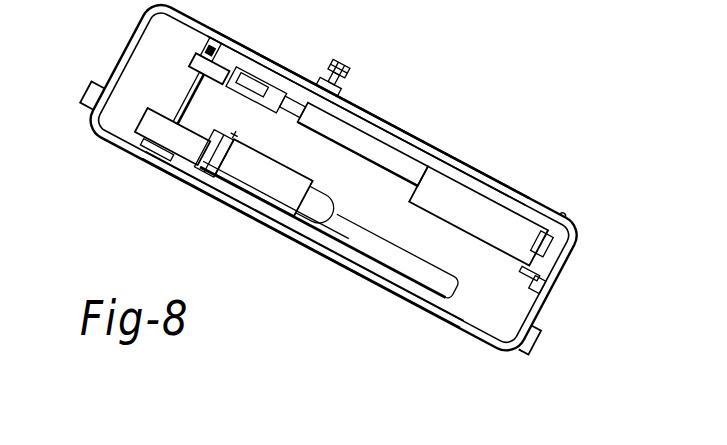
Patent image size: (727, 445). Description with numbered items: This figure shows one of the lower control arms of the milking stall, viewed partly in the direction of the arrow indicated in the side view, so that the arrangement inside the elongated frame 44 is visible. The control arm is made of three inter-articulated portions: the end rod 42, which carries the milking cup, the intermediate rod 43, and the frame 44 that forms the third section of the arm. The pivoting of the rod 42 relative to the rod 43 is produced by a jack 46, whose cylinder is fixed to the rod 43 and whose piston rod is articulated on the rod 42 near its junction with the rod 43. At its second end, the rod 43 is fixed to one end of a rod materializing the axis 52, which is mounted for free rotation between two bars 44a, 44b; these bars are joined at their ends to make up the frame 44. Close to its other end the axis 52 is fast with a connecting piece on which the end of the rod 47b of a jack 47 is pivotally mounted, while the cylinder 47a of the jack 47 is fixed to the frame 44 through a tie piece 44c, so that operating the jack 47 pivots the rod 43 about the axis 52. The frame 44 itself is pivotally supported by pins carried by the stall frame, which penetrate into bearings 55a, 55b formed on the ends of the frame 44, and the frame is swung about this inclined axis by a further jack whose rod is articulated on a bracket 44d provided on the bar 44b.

The rod 42 is at (438, 283).
The rod 43 is at (152, 134).
The frame 44 is at (136, 34).
The bar 44a is at (363, 273).
The bar 44b is at (437, 148).
The tie piece 44c is at (543, 287).
The bracket 44d is at (338, 57).
The jack 46 is at (260, 192).
The jack 47 is at (385, 147).
The cylinder 47a is at (496, 213).
The rod 47b is at (292, 103).
The axis 52 is at (190, 90).
The bearing 55a is at (86, 99).
The bearing 55b is at (540, 334).